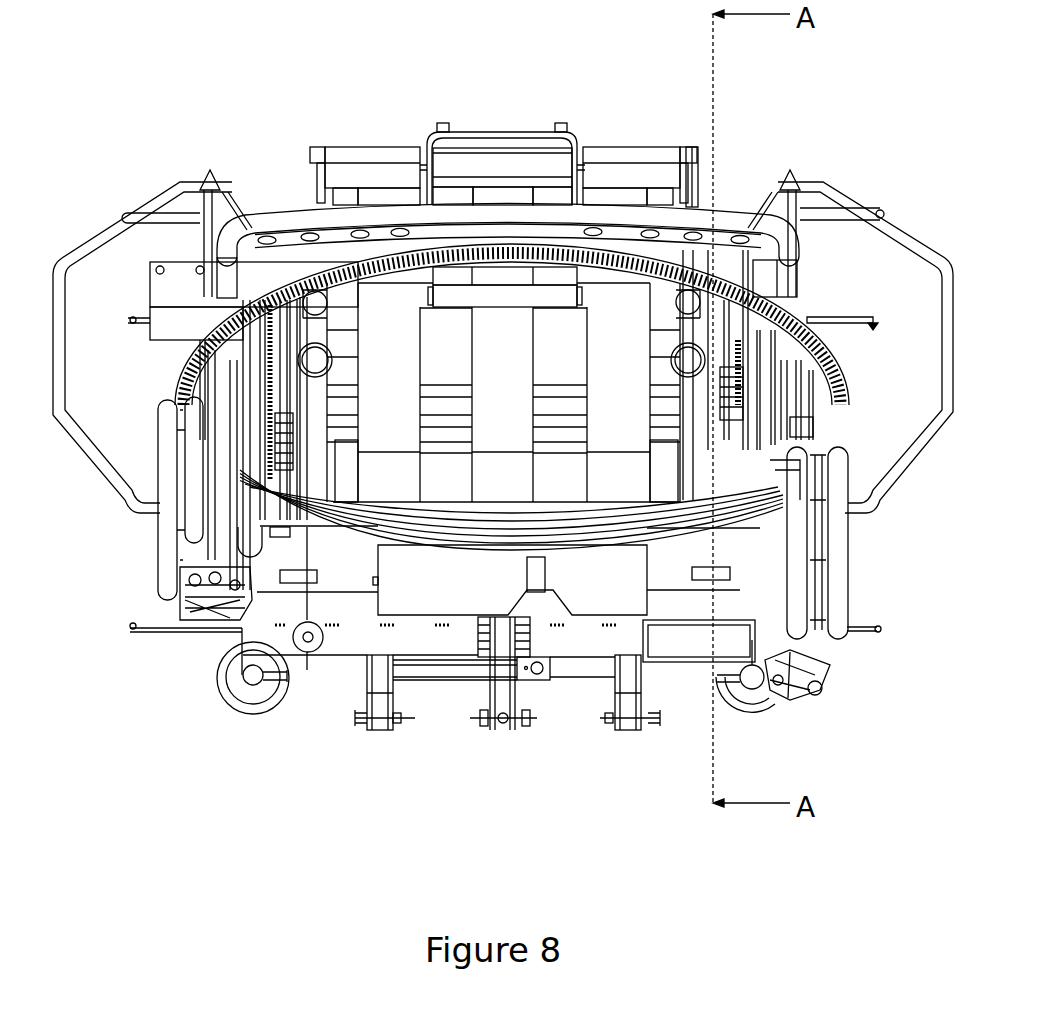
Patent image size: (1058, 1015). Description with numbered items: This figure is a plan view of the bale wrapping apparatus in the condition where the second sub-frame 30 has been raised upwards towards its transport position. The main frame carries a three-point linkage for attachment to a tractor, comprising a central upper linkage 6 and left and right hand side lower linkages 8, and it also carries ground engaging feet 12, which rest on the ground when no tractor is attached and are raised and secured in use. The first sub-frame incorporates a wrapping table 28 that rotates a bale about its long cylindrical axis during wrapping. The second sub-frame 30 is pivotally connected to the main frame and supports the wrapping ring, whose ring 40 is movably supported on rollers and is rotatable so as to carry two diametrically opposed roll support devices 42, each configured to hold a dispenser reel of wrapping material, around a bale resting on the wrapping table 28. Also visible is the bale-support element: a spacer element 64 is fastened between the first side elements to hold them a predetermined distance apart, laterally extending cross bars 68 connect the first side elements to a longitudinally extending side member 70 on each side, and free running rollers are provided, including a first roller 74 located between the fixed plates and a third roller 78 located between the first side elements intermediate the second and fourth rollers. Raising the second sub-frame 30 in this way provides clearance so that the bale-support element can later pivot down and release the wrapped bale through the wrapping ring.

The central upper linkage 6 is at (488, 700).
The lower linkages 8 is at (364, 700).
The ground engaging feet 12 is at (250, 682).
The wrapping table 28 is at (385, 310).
The second sub-frame 30 is at (746, 186).
The ring 40 is at (190, 355).
The roll support device 42 is at (163, 538).
The spacer element 64 is at (478, 130).
The cross bars 68 is at (353, 155).
The longitudinally extending side member 70 is at (700, 175).
The first roller 74 is at (512, 300).
The third roller 78 is at (515, 170).